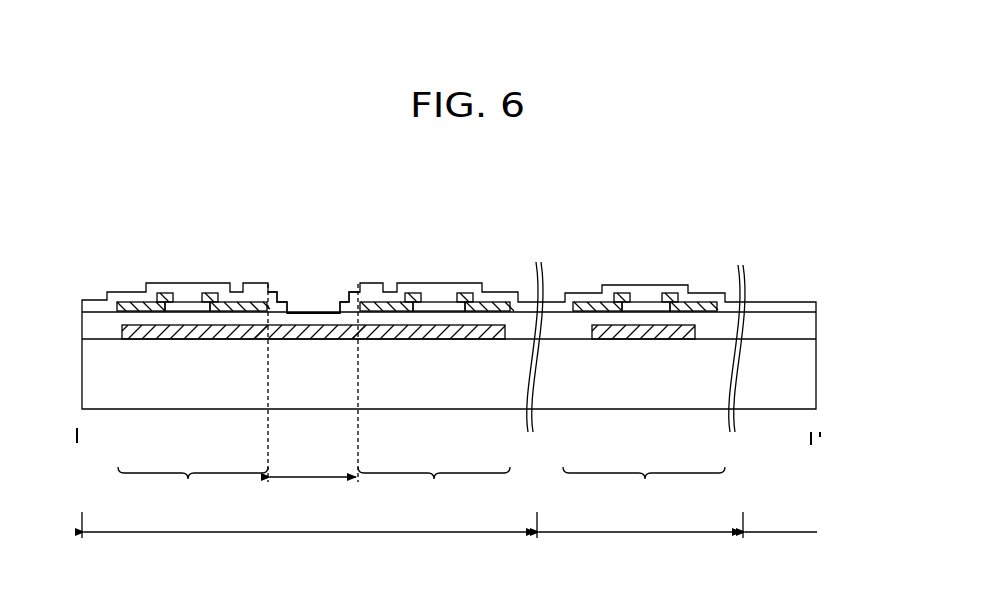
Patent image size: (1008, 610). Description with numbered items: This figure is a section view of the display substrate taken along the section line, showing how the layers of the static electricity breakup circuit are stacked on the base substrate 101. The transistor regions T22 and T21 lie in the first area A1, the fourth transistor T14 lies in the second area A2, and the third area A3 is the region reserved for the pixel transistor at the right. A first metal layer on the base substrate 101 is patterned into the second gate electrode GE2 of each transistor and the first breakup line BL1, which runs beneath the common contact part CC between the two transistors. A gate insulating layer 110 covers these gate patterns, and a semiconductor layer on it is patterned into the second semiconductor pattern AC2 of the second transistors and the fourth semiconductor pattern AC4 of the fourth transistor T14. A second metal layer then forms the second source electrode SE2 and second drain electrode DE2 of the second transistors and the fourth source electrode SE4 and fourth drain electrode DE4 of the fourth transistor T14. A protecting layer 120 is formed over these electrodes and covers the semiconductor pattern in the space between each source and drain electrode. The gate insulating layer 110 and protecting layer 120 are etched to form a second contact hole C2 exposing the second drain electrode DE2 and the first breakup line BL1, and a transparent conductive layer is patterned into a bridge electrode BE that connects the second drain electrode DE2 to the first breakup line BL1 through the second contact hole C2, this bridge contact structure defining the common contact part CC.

The base substrate 101 is at (774, 398).
The gate insulating layer 110 is at (776, 325).
The protecting layer 120 is at (97, 300).
The second gate electrode GE2 is at (154, 332).
The first breakup line BL1 is at (393, 333).
The second contact hole C2 is at (301, 325).
The bridge electrode BE is at (312, 313).
The second source electrode SE2 is at (166, 293).
The second semiconductor pattern AC2 is at (188, 302).
The second drain electrode DE2 is at (211, 293).
The fourth source electrode SE4 is at (621, 293).
The fourth semiconductor pattern AC4 is at (641, 302).
The fourth drain electrode DE4 is at (670, 293).
The second transistor T22 is at (193, 485).
The common contact part CC is at (313, 491).
The transistor T21 is at (434, 486).
The fourth transistor T14 is at (644, 487).
The first area A1 is at (309, 536).
The second area A2 is at (641, 537).
The third area A3 is at (781, 548).